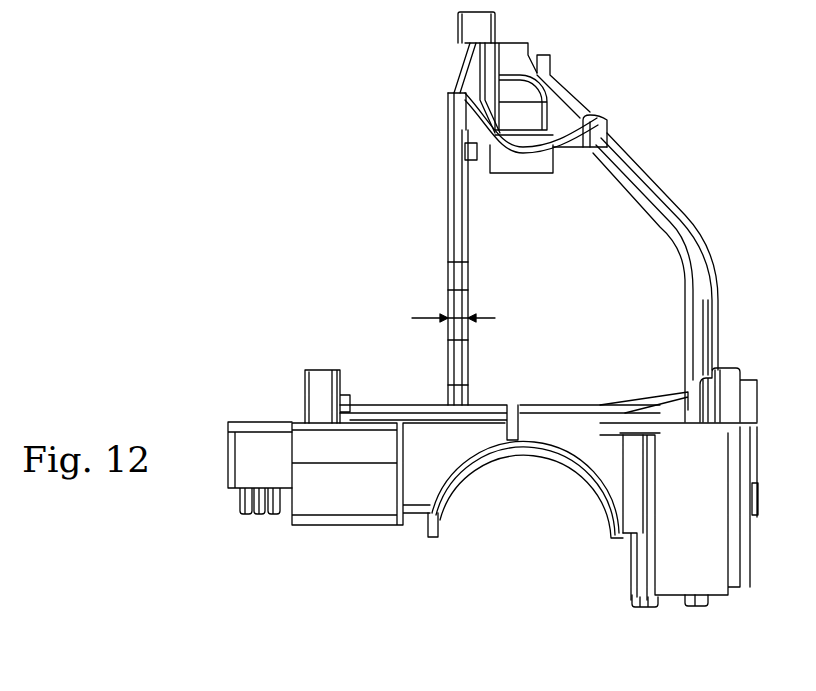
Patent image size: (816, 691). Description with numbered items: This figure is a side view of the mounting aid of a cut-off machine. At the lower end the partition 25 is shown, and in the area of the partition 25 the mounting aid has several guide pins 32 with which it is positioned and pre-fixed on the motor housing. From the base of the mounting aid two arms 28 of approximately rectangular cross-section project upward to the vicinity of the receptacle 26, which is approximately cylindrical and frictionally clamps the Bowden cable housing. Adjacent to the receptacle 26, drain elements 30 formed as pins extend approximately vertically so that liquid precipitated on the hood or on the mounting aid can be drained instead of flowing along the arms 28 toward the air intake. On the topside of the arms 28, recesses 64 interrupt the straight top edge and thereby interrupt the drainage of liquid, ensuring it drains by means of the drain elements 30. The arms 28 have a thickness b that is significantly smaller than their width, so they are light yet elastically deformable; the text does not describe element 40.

The partition 25 is at (362, 487).
The receptacle 26 is at (490, 24).
The arms 28 is at (455, 258).
The drain elements 30 is at (470, 165).
The guide pins 32 is at (141, 0).
The brackets 40 is at (466, 125).
The recesses 64 is at (587, 115).
The thickness b is at (447, 325).